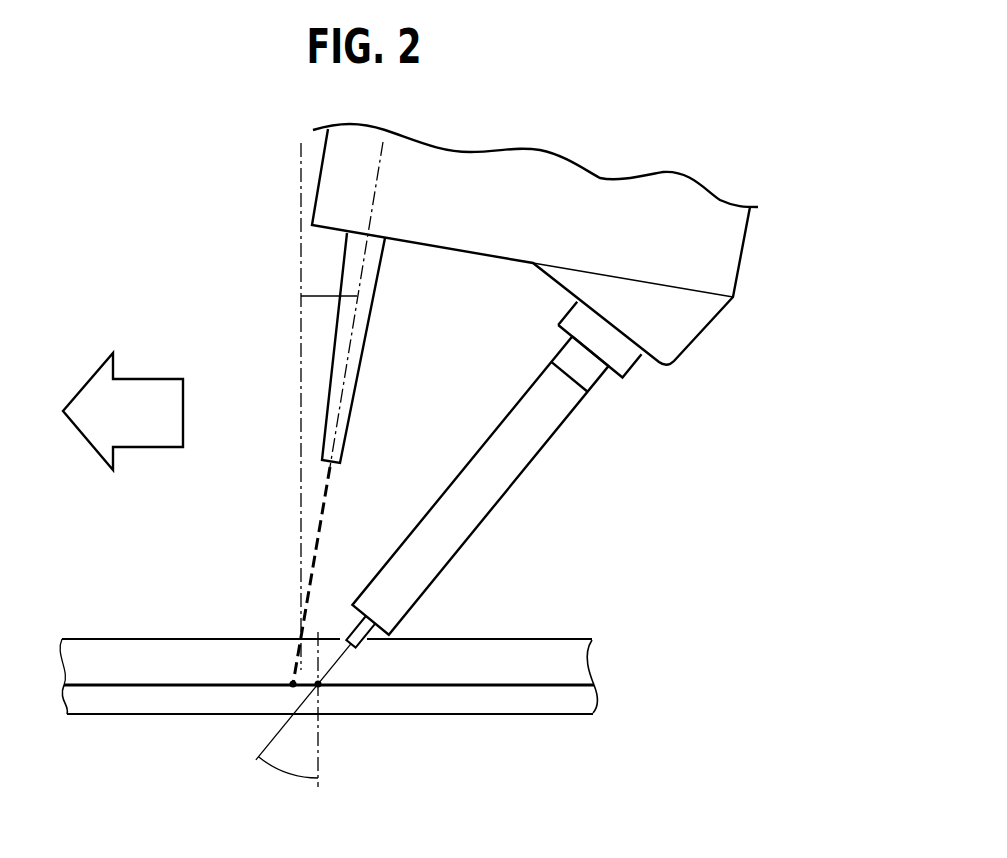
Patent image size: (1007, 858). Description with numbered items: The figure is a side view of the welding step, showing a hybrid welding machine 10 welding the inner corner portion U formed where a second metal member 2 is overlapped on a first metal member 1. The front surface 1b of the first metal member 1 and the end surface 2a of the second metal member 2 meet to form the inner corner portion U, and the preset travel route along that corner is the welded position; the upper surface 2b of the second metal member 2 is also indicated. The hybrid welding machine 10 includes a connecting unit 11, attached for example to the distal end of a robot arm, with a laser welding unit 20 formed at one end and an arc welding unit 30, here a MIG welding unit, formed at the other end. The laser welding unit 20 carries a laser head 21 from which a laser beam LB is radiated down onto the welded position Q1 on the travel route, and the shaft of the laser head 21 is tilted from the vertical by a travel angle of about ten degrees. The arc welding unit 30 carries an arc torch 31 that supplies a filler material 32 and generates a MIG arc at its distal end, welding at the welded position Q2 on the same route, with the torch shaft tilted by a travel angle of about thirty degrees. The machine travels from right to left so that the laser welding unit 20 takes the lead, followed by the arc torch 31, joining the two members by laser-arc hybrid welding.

The hybrid welding machine 10 is at (576, 238).
The connecting unit 11 is at (548, 178).
The laser welding unit 20 is at (393, 304).
The laser head 21 is at (347, 393).
The arc welding unit (MIG welding unit) 30 is at (486, 475).
The arc torch 31 is at (455, 533).
The filler material 32 is at (355, 627).
The first metal member 1 is at (329, 725).
The front surface of the first metal member 1b is at (467, 677).
The second metal member 2 is at (353, 634).
The end surface of the second metal member 2a is at (558, 662).
The upper surface of second plate 2b is at (470, 637).
The laser beam LB is at (328, 517).
The welded position by the laser beam Q1 is at (290, 684).
The welded position by the MIG arc Q2 is at (323, 687).
The inner corner portion U is at (217, 678).